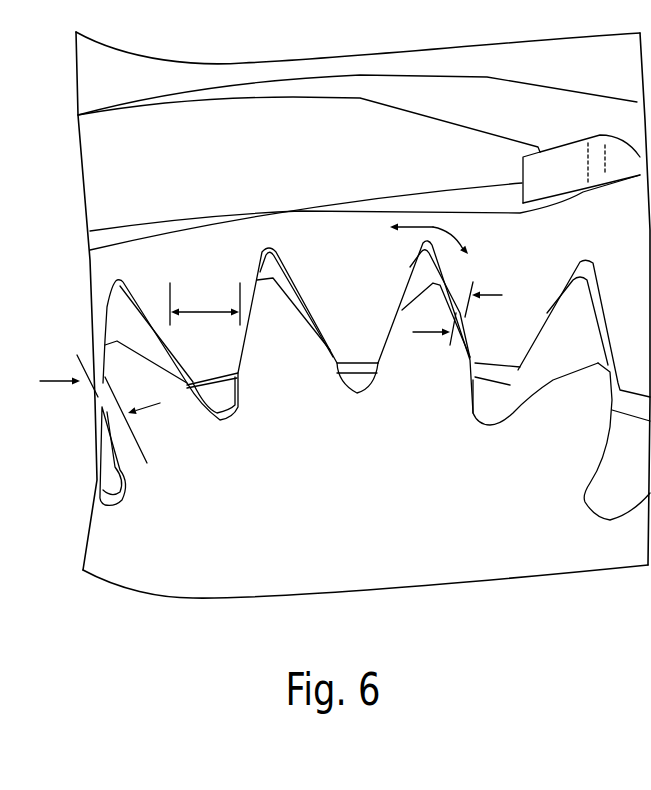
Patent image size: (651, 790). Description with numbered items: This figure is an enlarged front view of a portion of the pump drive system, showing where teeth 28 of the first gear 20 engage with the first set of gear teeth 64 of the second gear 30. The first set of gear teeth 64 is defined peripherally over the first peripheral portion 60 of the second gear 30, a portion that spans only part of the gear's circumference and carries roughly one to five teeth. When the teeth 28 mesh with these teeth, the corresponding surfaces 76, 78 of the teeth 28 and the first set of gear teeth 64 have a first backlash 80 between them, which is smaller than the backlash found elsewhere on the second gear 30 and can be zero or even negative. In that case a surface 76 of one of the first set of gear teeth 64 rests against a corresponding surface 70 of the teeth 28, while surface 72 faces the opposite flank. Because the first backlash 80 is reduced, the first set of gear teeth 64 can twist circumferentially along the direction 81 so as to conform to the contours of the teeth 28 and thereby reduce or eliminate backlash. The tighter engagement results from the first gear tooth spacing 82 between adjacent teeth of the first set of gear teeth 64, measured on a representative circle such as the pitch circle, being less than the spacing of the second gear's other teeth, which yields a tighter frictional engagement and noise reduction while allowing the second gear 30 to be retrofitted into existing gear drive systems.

The first gear 20 is at (595, 477).
The teeth 28 is at (518, 410).
The second gear 30 is at (432, 213).
The first peripheral portion 60 is at (308, 194).
The first set of gear teeth 64 is at (312, 302).
The surface 70 is at (245, 347).
The surface 72 is at (469, 346).
The surface 76 is at (243, 352).
The surface 78 is at (472, 338).
The first backlash 80 is at (500, 292).
The direction 81 is at (433, 227).
The first gear tooth spacing 82 is at (203, 308).